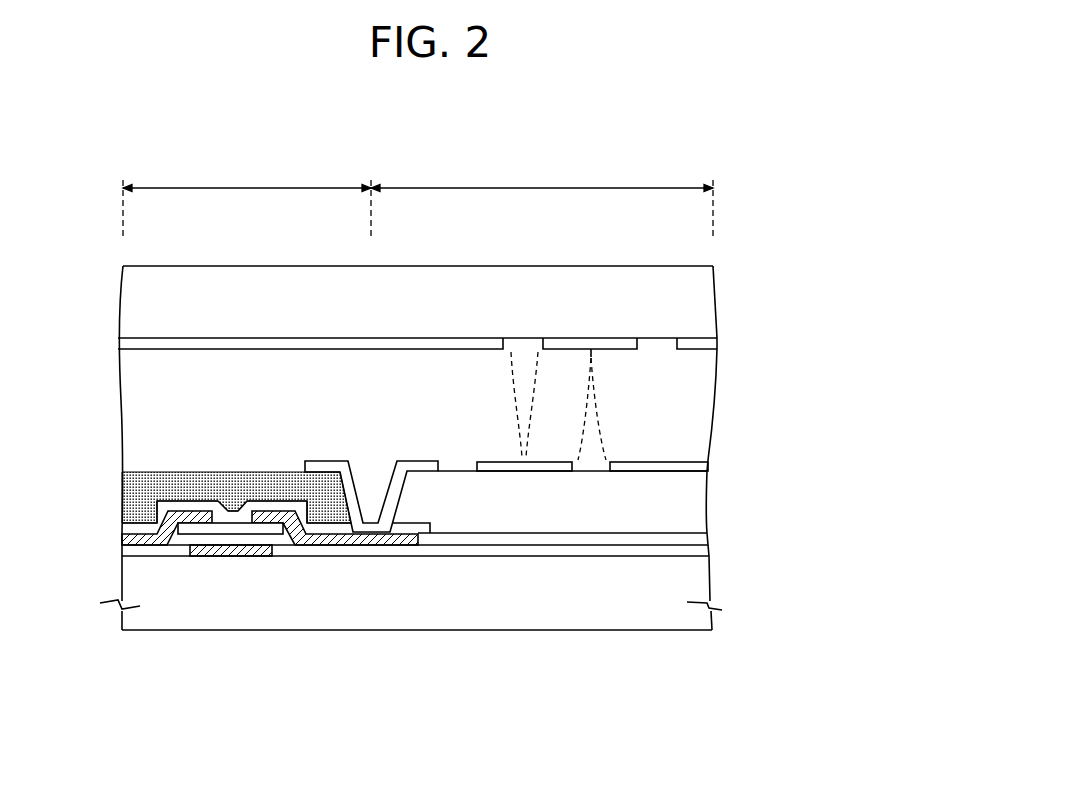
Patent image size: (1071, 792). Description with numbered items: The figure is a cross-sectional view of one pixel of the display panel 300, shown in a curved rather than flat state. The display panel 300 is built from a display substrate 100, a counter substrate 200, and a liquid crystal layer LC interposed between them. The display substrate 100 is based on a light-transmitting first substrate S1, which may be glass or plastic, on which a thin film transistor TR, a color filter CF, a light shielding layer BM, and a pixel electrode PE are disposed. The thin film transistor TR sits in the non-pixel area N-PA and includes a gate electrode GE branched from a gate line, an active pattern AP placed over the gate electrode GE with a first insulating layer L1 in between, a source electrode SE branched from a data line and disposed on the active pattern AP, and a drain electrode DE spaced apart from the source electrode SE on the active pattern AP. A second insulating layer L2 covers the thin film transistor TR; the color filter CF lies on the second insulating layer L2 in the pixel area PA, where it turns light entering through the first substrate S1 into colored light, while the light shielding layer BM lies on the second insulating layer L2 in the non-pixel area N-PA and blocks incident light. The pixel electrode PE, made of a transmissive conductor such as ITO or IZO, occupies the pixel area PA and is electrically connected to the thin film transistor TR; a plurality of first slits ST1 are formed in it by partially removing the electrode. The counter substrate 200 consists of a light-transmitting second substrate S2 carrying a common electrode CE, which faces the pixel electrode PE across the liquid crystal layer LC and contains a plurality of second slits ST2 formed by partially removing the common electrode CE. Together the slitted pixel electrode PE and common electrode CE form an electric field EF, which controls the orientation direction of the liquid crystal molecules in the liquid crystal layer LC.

The display panel 300 is at (738, 164).
The counter substrate 200 is at (777, 294).
The display substrate 100 is at (777, 452).
The second substrate S2 is at (693, 307).
The common electrode CE is at (693, 345).
The second slit ST2 is at (523, 348).
The liquid crystal layer LC is at (693, 408).
The pixel electrode PE is at (693, 466).
The color filter CF is at (693, 497).
The second insulating layer L2 is at (693, 535).
The first insulating layer L1 is at (693, 558).
The first substrate S1 is at (693, 592).
The source electrode SE is at (160, 538).
The gate electrode GE is at (208, 548).
The active pattern AP is at (252, 526).
The drain electrode DE is at (292, 528).
The light shielding layer BM is at (327, 505).
The thin film transistor TR is at (142, 686).
The electric field EF is at (517, 386).
The first slit ST1 is at (457, 462).
The non-pixel area N-PA is at (247, 197).
The pixel area PA is at (542, 198).